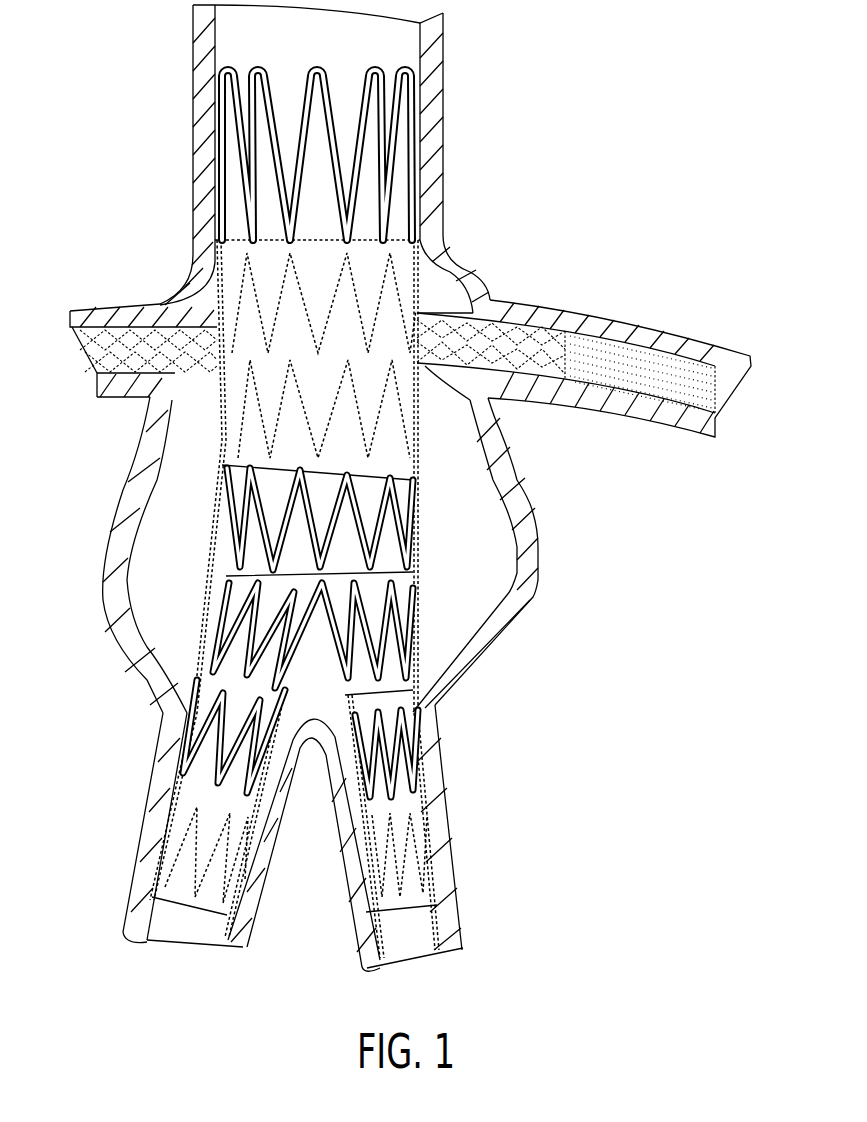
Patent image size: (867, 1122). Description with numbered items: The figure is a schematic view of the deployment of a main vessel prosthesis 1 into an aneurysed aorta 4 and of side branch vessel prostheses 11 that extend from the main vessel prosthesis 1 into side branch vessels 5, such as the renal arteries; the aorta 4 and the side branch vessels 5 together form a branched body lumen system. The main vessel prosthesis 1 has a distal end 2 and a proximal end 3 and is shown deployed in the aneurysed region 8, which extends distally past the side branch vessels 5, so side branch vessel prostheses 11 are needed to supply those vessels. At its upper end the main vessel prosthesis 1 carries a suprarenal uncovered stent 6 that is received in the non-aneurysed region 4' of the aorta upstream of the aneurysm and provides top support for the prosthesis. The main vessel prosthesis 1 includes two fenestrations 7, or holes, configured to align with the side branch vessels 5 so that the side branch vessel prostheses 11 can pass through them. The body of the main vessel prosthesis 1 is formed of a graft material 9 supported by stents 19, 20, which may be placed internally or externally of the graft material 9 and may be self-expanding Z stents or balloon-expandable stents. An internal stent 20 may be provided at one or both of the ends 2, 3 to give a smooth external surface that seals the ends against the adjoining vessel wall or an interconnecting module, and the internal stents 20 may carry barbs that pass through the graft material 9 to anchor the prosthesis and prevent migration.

The main vessel prosthesis 1 is at (292, 437).
The distal end 2 is at (140, 904).
The proximal end 3 is at (395, 242).
The aneurysed aorta 4 is at (455, 163).
The non-aneurysed region 4' is at (256, 158).
The side branch vessels 5 is at (95, 316).
The suprarenal uncovered stent 6 is at (395, 180).
The fenestrations 7 is at (217, 303).
The aneurysed region 8 is at (508, 588).
The graft material 9 is at (298, 462).
The side branch vessel prostheses 11 is at (136, 316).
The stents 19 is at (415, 522).
The internal stent 20 is at (333, 300).